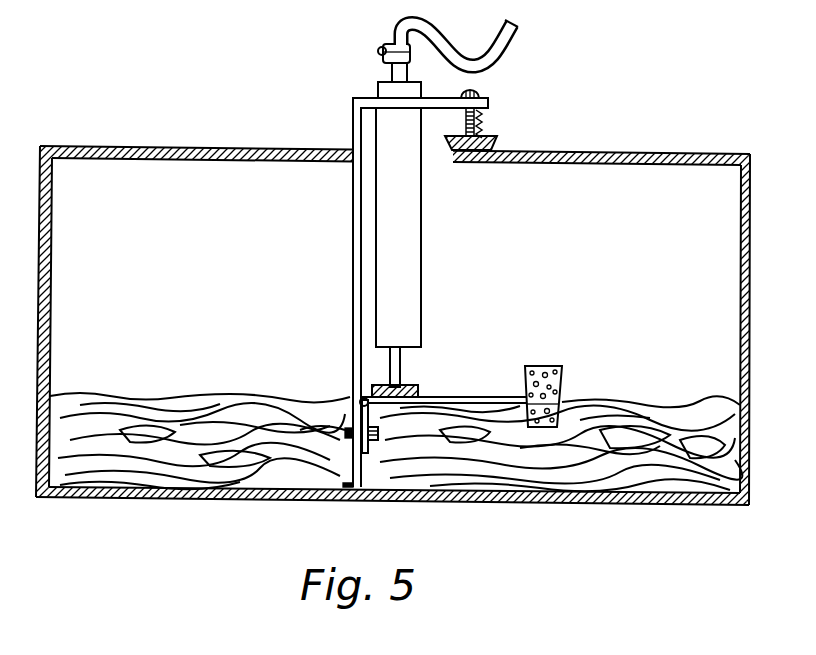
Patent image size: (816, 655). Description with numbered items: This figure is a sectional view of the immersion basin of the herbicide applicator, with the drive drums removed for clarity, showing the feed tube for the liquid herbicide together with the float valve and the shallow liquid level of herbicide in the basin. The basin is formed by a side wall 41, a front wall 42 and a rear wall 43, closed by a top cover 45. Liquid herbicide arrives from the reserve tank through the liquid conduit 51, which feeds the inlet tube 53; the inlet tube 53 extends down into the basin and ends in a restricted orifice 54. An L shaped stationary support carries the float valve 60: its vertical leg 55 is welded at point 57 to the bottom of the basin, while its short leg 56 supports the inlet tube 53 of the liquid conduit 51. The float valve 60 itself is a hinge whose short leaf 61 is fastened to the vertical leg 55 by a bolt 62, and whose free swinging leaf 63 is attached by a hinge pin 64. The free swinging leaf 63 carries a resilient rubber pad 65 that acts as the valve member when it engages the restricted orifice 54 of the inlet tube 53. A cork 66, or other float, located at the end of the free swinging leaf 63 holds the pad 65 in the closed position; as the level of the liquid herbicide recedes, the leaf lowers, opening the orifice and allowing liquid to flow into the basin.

The side wall 41 is at (393, 312).
The front wall 42 is at (741, 285).
The rear wall 43 is at (51, 310).
The top cover 45 is at (188, 144).
The liquid conduit 51 is at (513, 50).
The inlet tube 53 is at (427, 248).
The restricted orifice 54 is at (402, 360).
The vertical leg 55 is at (352, 248).
The short leg 56 is at (490, 105).
The weld point 57 is at (368, 480).
The float valve 60 is at (480, 363).
The short leaf 61 is at (366, 455).
The bolt 62 is at (372, 444).
The free swinging leaf 63 is at (456, 396).
The hinge pin 64 is at (358, 400).
The resilient rubber pad 65 is at (420, 393).
The cork 66 is at (566, 374).